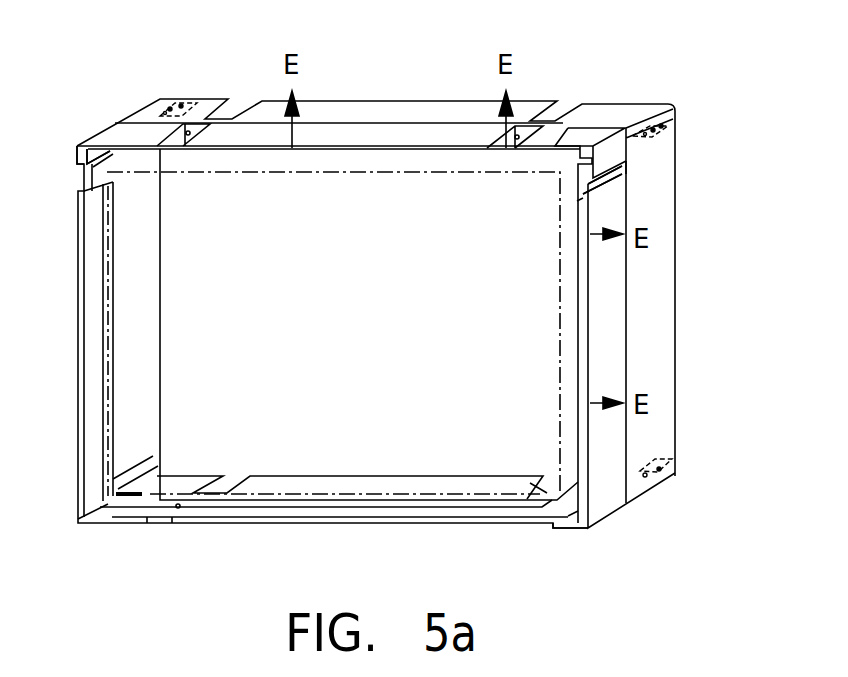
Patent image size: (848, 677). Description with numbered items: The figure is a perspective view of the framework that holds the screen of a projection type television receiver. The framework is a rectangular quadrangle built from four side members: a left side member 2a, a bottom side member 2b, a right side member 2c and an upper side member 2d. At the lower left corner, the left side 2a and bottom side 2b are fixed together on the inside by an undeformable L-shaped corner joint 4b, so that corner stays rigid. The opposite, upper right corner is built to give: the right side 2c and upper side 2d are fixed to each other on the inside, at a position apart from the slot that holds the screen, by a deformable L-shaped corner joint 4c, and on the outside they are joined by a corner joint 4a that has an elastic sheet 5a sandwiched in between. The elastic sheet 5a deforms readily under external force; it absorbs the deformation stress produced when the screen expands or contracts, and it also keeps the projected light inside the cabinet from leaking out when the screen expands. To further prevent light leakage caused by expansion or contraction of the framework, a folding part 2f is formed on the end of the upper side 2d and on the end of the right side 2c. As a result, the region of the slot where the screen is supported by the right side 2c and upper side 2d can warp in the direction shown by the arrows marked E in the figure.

The left side member 2a is at (140, 292).
The bottom side member 2b is at (432, 483).
The right side member 2c is at (658, 312).
The upper side member 2d is at (398, 110).
The folding part 2f is at (568, 528).
The corner joint 4a is at (613, 155).
The angle bracket 4b is at (140, 485).
The deformable L-shaped corner joint 4c is at (160, 97).
The elastic sheet 5a is at (570, 147).